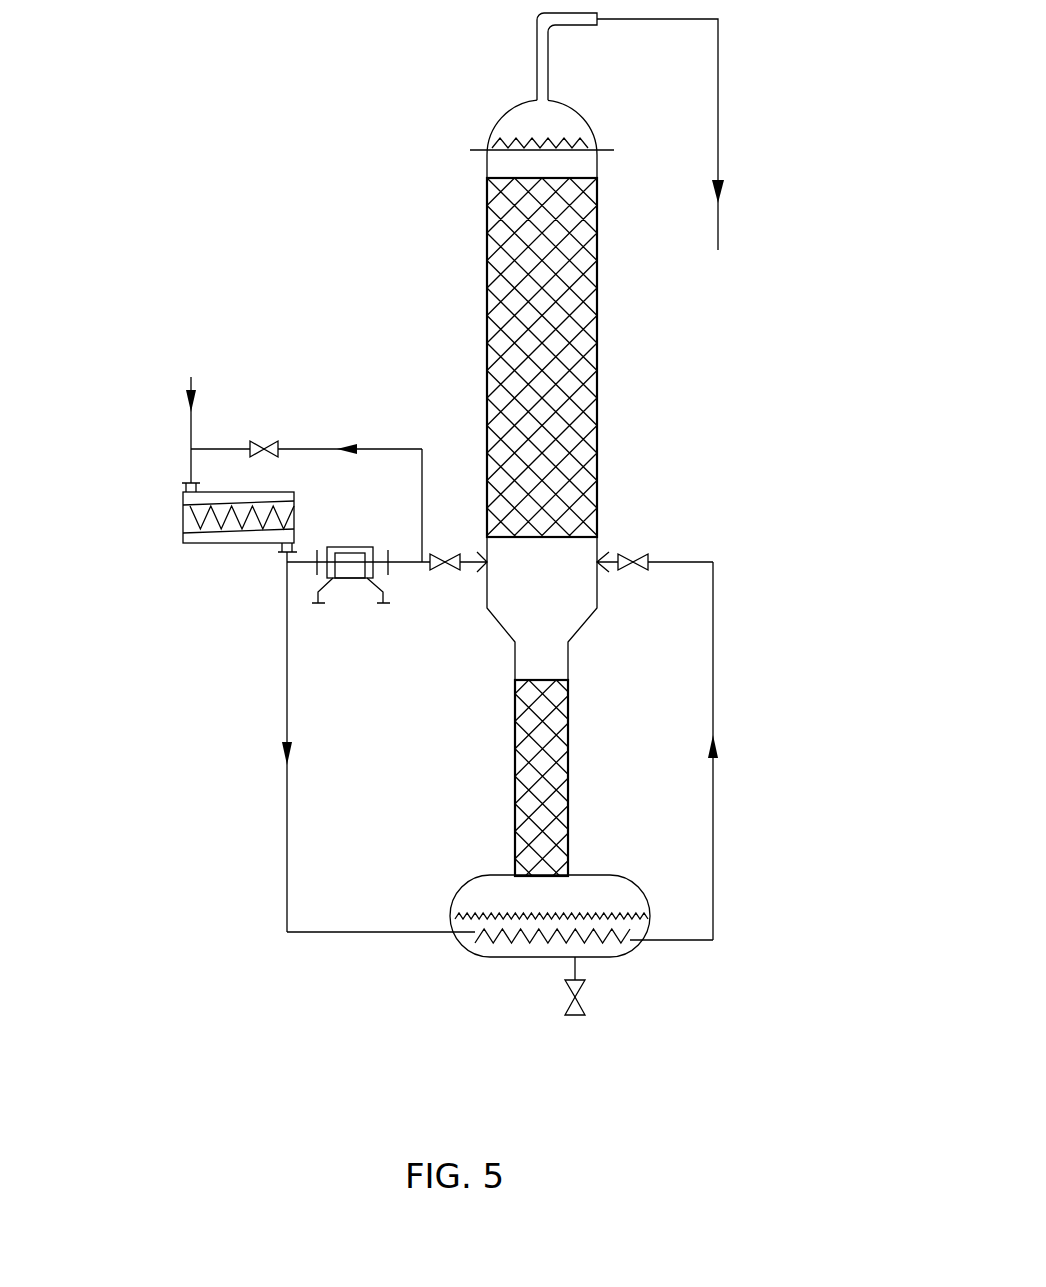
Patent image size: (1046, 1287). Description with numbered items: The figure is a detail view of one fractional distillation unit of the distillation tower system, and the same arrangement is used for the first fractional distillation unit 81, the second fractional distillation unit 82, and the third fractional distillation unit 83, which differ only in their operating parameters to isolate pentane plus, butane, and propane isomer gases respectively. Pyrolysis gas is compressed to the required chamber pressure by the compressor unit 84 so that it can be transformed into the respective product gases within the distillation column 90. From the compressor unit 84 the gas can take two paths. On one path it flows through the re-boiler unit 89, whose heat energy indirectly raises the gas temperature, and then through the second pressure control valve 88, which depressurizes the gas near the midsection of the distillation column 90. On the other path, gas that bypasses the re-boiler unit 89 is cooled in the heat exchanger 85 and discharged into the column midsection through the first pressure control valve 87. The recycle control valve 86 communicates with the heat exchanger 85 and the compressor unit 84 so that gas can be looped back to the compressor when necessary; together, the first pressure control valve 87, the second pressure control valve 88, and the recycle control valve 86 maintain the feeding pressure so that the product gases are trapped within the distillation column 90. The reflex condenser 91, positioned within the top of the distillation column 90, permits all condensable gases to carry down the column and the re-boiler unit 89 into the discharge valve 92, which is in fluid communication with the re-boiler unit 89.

The first fractional distillation unit 81 is at (433, 548).
The second fractional distillation unit 82 is at (433, 548).
The third fractional distillation unit 83 is at (341, 95).
The compressor unit 84 is at (213, 538).
The heat exchanger 85 is at (343, 578).
The recycle control valve 86 is at (278, 445).
The first pressure control valve 87 is at (455, 565).
The second pressure control valve 88 is at (637, 562).
The re-boiler unit 89 is at (473, 945).
The distillation column 90 is at (592, 312).
The reflex condenser 91 is at (519, 143).
The discharge valve 92 is at (580, 1012).